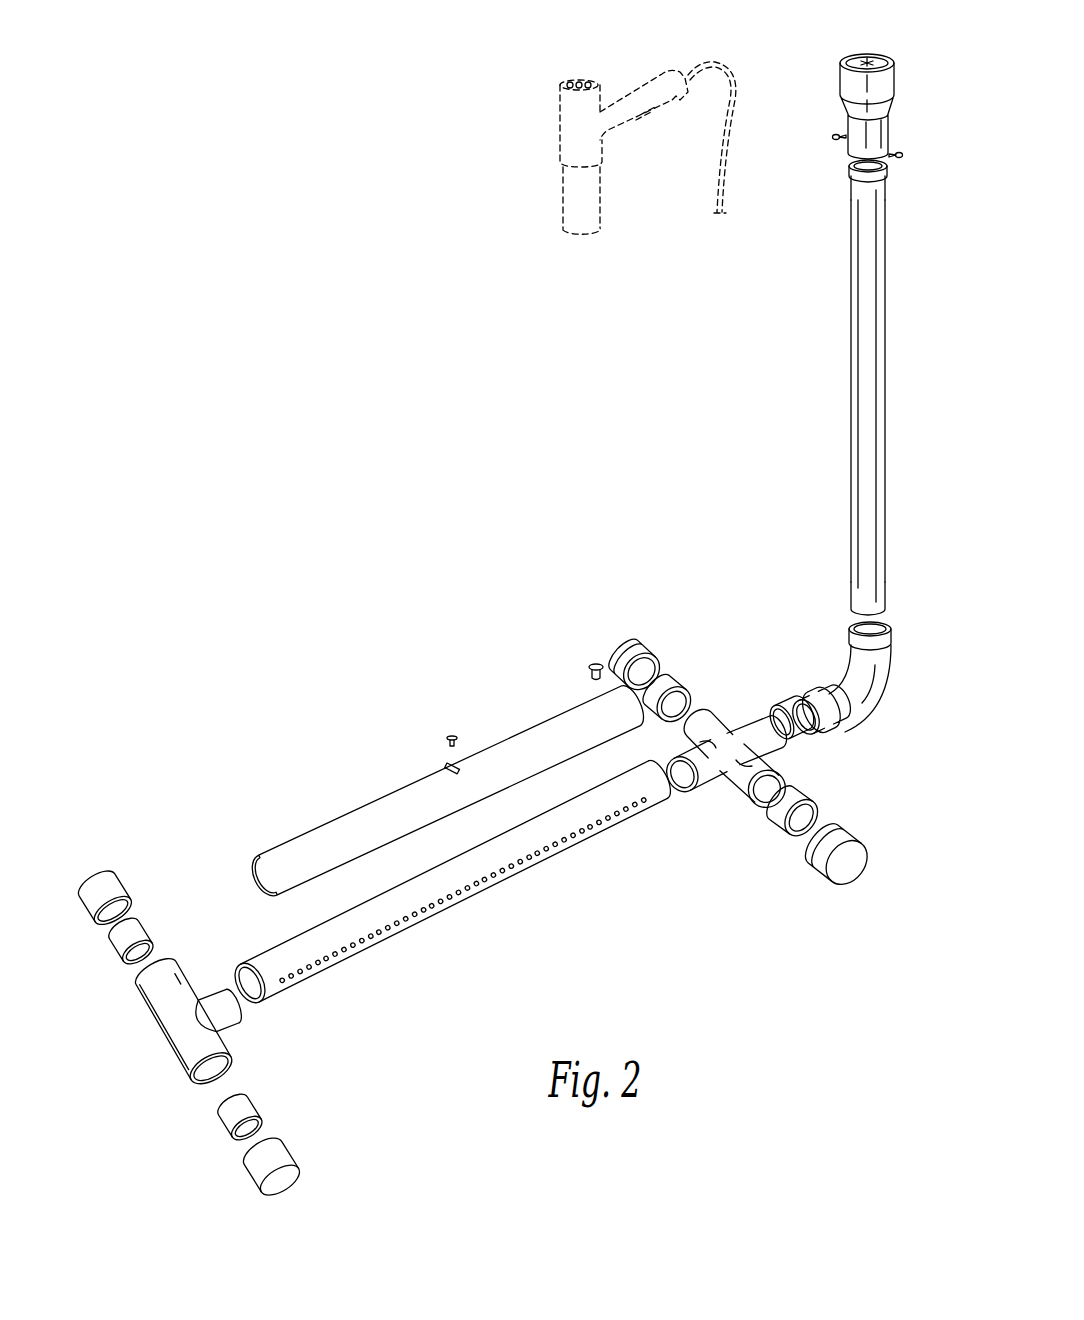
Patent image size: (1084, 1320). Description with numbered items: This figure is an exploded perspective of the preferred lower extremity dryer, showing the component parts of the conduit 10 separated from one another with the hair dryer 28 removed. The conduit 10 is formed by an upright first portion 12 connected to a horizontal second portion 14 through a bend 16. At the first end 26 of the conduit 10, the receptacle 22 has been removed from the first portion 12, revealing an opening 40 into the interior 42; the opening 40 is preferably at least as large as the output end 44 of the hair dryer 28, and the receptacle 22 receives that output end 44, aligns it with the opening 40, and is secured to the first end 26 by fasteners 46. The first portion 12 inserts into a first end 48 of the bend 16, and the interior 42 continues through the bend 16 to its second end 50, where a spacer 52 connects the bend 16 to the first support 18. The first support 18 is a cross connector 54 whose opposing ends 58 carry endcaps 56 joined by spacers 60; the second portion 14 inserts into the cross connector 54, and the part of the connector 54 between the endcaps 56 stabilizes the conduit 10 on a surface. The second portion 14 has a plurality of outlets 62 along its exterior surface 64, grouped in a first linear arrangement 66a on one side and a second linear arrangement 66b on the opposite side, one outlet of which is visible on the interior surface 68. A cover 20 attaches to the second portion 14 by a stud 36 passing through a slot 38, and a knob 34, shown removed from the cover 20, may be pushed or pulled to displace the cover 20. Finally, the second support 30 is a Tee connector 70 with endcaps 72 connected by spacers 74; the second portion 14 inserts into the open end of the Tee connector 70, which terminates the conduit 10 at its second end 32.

The conduit 10 is at (479, 524).
The first portion 12 is at (841, 395).
The second portion 14 is at (441, 896).
The bend 16 is at (880, 678).
The first support 18 is at (733, 764).
The cover 20 is at (532, 738).
The receptacle 22 is at (843, 87).
The first end 26 is at (846, 180).
The hair dryer 28 is at (646, 86).
The second support 30 is at (197, 1016).
The second end 32 is at (186, 1006).
The knob 34 is at (591, 666).
The stud 36 is at (451, 737).
The slot 38 is at (448, 765).
The opening 40 is at (846, 164).
The interior 42 is at (884, 165).
The output end 44 is at (624, 193).
The fasteners 46 is at (834, 134).
The first end of the bend 48 is at (849, 613).
The second end of the bend 50 is at (821, 740).
The spacer 52 is at (790, 703).
The cross connector 54 is at (722, 736).
The endcaps 56 is at (624, 650).
The opposing ends 58 is at (704, 714).
The spacers 60 is at (670, 683).
The outlets 62 is at (437, 932).
The exterior surface 64 is at (462, 901).
The first linear arrangement 66a is at (288, 986).
The second linear arrangement 66b is at (276, 935).
The interior surface 68 is at (248, 978).
The Tee connector 70 is at (155, 1028).
The endcaps 72 is at (97, 876).
The spacers 74 is at (110, 952).